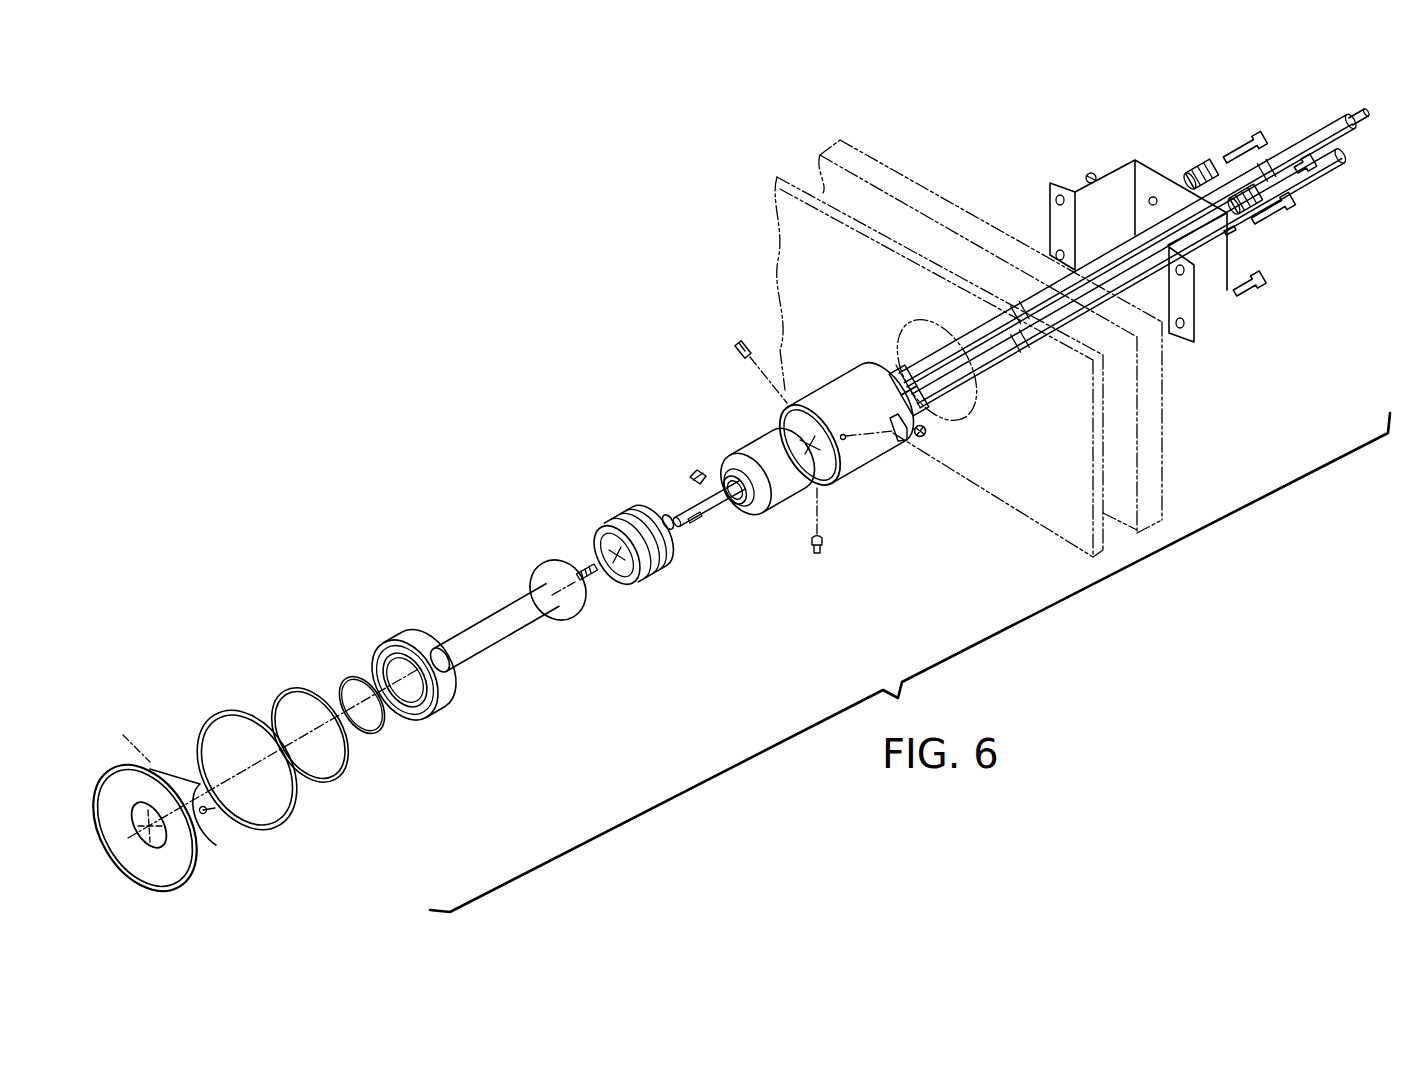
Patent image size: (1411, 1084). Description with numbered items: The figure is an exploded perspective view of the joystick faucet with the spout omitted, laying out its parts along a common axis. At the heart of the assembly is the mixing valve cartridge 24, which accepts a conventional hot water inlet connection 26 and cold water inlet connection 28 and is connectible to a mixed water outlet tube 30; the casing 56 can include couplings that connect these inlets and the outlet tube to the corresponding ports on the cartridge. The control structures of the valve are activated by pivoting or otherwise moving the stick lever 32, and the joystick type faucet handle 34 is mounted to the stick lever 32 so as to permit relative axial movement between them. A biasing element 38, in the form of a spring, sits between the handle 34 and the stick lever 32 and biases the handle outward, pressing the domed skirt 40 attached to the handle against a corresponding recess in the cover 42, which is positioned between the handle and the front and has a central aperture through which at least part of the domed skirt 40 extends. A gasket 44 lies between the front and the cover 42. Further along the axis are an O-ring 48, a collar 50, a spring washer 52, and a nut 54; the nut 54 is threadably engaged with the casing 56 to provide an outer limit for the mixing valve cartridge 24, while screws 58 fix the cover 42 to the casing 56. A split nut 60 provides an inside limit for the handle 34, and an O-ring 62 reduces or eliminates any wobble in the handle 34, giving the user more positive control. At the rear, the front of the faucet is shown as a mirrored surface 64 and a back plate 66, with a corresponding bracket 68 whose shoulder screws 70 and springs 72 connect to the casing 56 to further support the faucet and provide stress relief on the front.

The mixing valve cartridge 24 is at (777, 498).
The hot water inlet connection 26 is at (1337, 165).
The cold water inlet connection 28 is at (1305, 138).
The mixed water outlet tube 30 is at (1362, 115).
The stick lever 32 is at (699, 516).
The joystick type faucet handle 34 is at (467, 628).
The biasing element 38 is at (584, 566).
The domed skirt 40 is at (573, 612).
The cover 42 is at (107, 772).
The gasket 44 is at (295, 817).
The O-ring 48 is at (287, 683).
The collar 50 is at (432, 703).
The spring washer 52 is at (348, 673).
The nut 54 is at (641, 580).
The casing 56 is at (858, 458).
The screws 58 is at (927, 431).
The split nut 60 is at (697, 468).
The O-ring 62 is at (666, 515).
The mirrored surface 64 is at (777, 207).
The back plate 66 is at (840, 138).
The bracket 68 is at (1208, 289).
The shoulder screws 70 is at (1252, 133).
The springs 72 is at (1240, 192).